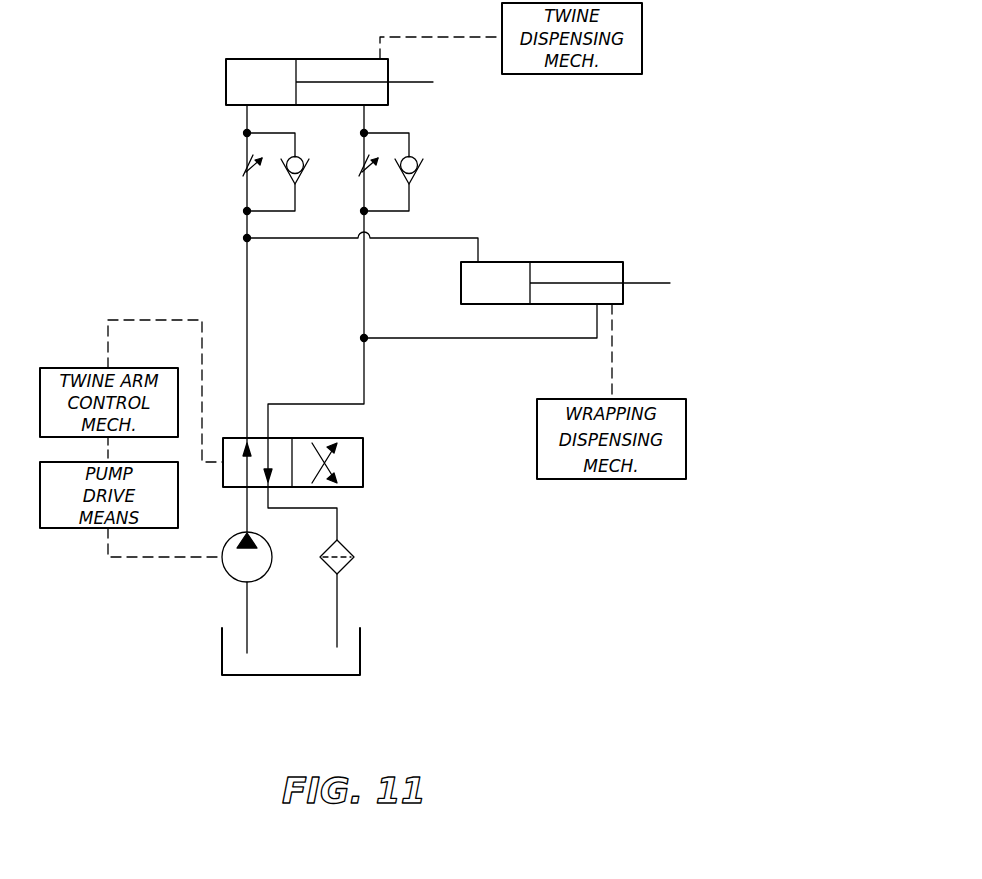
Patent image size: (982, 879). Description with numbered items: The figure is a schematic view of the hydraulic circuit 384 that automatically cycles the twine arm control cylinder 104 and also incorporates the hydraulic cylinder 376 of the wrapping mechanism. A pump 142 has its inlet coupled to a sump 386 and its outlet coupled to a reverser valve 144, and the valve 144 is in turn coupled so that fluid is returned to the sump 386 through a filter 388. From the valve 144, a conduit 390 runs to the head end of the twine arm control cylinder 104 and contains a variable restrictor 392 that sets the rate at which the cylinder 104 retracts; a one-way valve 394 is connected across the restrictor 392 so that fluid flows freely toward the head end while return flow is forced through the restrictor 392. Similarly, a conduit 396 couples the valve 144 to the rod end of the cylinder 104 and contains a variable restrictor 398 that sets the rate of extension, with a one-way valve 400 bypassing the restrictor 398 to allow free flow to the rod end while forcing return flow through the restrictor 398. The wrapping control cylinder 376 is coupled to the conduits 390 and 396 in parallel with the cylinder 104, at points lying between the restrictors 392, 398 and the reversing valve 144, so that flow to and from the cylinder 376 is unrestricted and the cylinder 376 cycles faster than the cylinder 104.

The twine arm control cylinder 104 is at (262, 57).
The pump 142 is at (258, 578).
The reverser valve 144 is at (357, 438).
The hydraulic cylinder 376 is at (607, 262).
The hydraulic circuit 384 is at (458, 498).
The sump 386 is at (360, 645).
The filter 388 is at (347, 546).
The conduit 390 is at (247, 277).
The variable restrictor 392 is at (246, 163).
The one-way valve 394 is at (310, 170).
The conduit 396 is at (364, 275).
The variable restrictor 398 is at (362, 165).
The one-way valve 400 is at (424, 174).